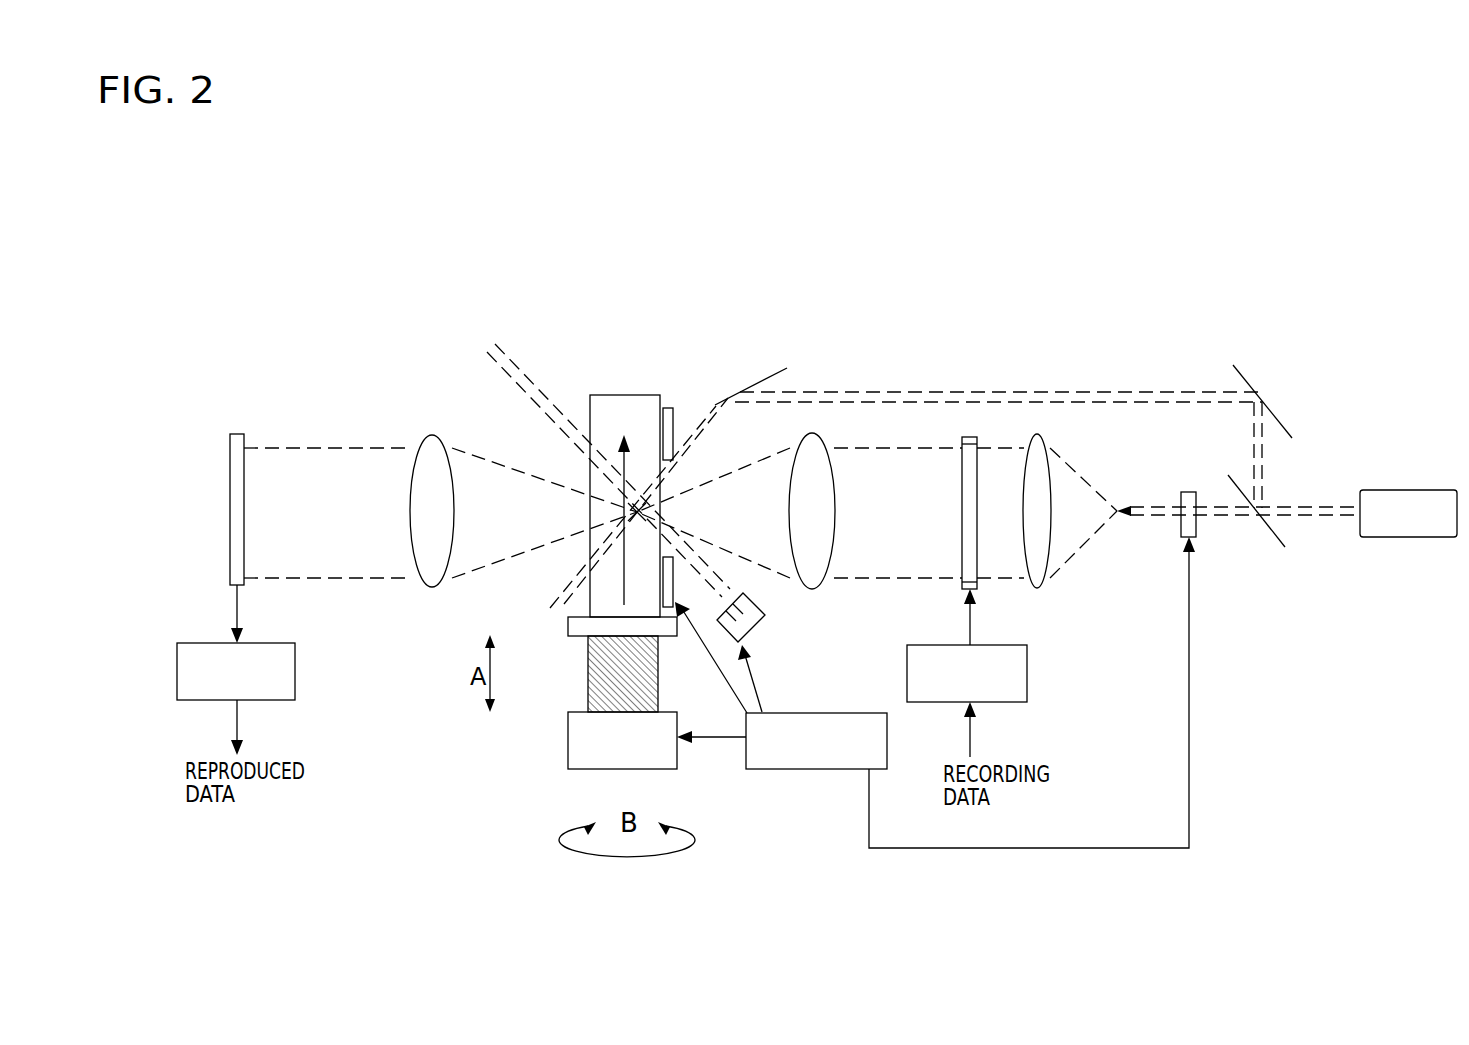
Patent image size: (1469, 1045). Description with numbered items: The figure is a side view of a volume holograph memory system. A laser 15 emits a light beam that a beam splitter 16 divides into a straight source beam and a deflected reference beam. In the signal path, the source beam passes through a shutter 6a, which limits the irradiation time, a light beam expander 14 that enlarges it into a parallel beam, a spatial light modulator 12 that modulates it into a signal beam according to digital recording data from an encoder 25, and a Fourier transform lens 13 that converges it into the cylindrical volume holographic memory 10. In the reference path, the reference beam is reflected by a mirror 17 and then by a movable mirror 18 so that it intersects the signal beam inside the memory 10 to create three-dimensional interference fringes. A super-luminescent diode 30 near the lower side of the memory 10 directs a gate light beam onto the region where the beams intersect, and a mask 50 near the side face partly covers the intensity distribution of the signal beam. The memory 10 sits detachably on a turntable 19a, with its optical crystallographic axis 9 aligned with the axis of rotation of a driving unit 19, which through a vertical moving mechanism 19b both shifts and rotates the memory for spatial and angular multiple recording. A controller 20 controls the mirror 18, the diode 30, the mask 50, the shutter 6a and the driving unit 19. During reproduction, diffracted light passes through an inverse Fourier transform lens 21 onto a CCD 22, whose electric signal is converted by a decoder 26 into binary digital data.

The shutter 6a is at (1192, 492).
The optical crystallographic axis 9 is at (623, 495).
The volume holographic memory 10 is at (632, 395).
The spatial light modulator 12 is at (968, 437).
The Fourier transform lens 13 is at (812, 590).
The light beam expander 14 is at (1082, 517).
The laser 15 is at (1408, 537).
The beam splitter 16 is at (1267, 527).
The mirror 17 is at (1277, 407).
The movable mirror 18 is at (771, 368).
The driving unit 19 is at (575, 745).
The turntable 19a is at (568, 637).
The vertical moving mechanism 19b is at (588, 672).
The controller 20 is at (775, 769).
The inverse Fourier transform lens 21 is at (432, 434).
The CCD 22 is at (237, 434).
The encoder 25 is at (1027, 666).
The decoder 26 is at (295, 668).
The super-luminescent diode 30 is at (752, 624).
The mask 50 is at (673, 408).